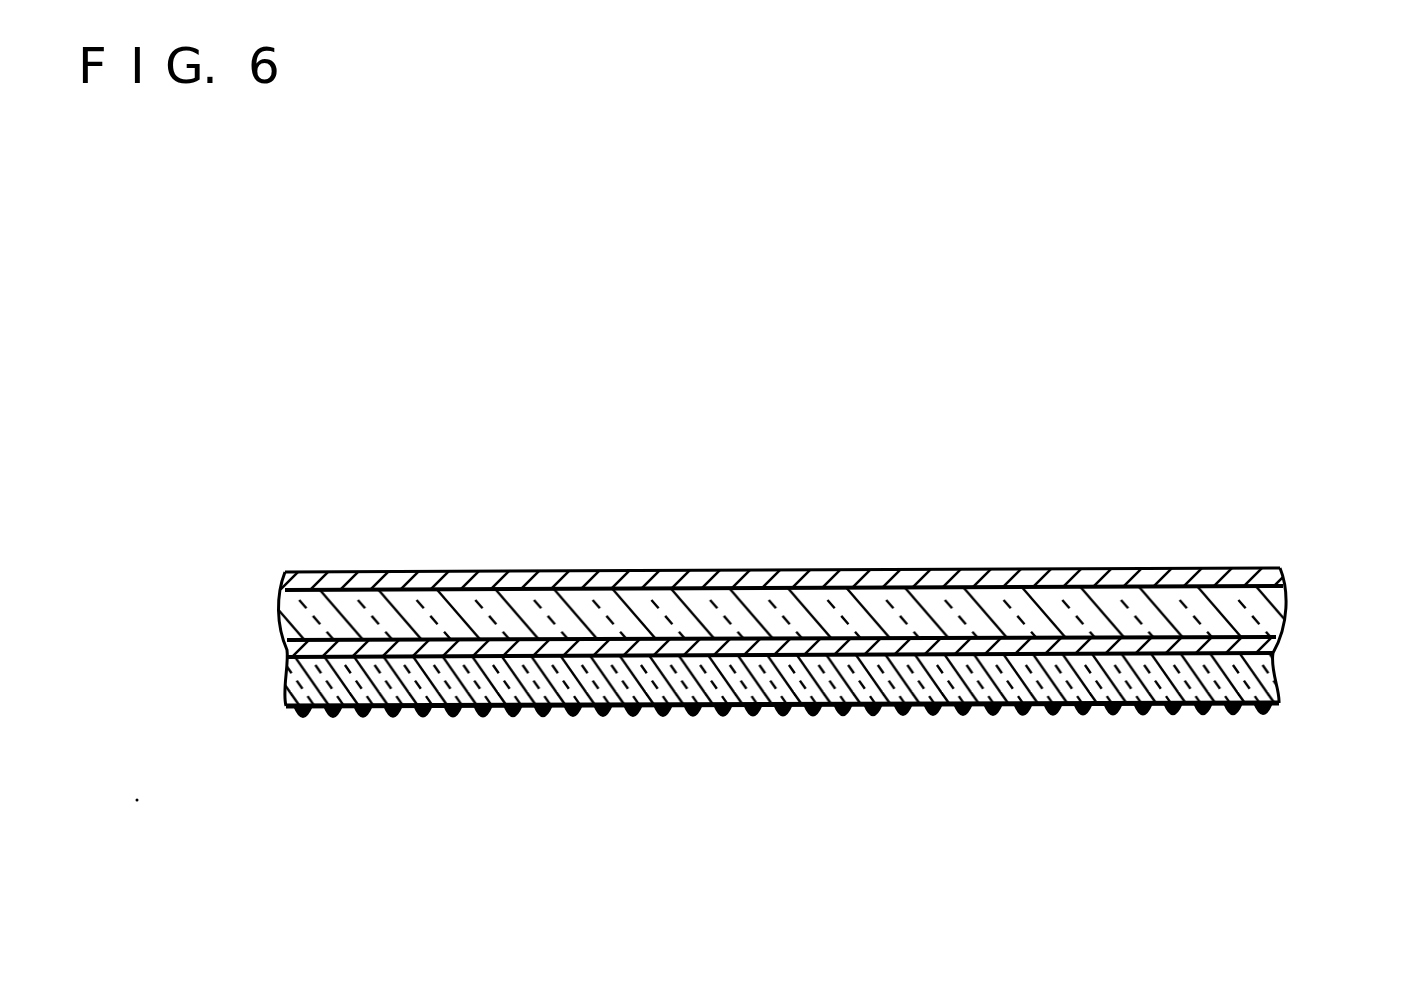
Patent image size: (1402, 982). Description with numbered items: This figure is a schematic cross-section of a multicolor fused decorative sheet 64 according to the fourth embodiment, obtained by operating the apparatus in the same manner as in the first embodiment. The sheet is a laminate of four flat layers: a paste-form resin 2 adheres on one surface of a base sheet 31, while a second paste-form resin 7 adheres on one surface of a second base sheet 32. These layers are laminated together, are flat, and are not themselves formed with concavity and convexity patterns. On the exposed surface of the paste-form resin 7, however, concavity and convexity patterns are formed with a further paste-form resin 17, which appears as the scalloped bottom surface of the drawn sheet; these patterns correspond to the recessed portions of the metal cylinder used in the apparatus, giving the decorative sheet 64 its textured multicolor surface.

The multicolor fused decorative sheet 64 is at (706, 650).
The base sheet 31 is at (793, 530).
The paste-form resin 2 is at (823, 606).
The base sheet 32 is at (831, 653).
The paste-form resin 7 is at (822, 703).
The paste-form resin 17 is at (783, 765).